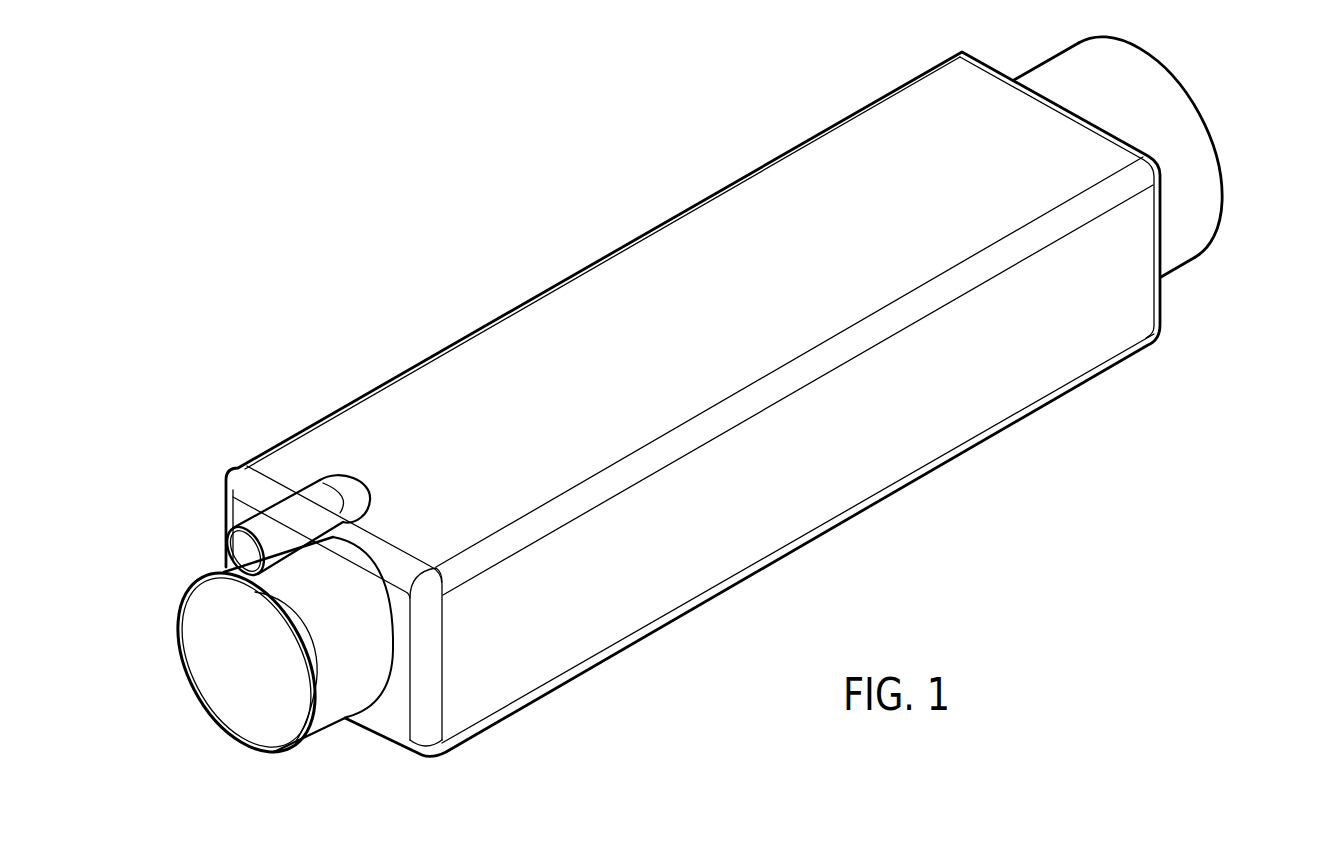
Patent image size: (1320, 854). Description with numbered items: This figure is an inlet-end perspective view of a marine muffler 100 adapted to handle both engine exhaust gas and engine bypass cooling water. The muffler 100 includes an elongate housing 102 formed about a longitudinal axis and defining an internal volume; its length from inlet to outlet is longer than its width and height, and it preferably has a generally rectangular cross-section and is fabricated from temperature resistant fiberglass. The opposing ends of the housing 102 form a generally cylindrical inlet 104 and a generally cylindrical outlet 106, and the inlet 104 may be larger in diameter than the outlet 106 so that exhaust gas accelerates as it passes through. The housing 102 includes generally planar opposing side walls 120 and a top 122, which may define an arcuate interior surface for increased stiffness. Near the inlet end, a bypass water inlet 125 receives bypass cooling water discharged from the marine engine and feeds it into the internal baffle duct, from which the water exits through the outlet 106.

The muffler 100 is at (700, 406).
The housing 102 is at (693, 404).
The inlet 104 is at (180, 661).
The outlet 106 is at (1220, 150).
The side wall 120 is at (788, 490).
The top 122 is at (736, 326).
The bypass water inlet 125 is at (267, 527).